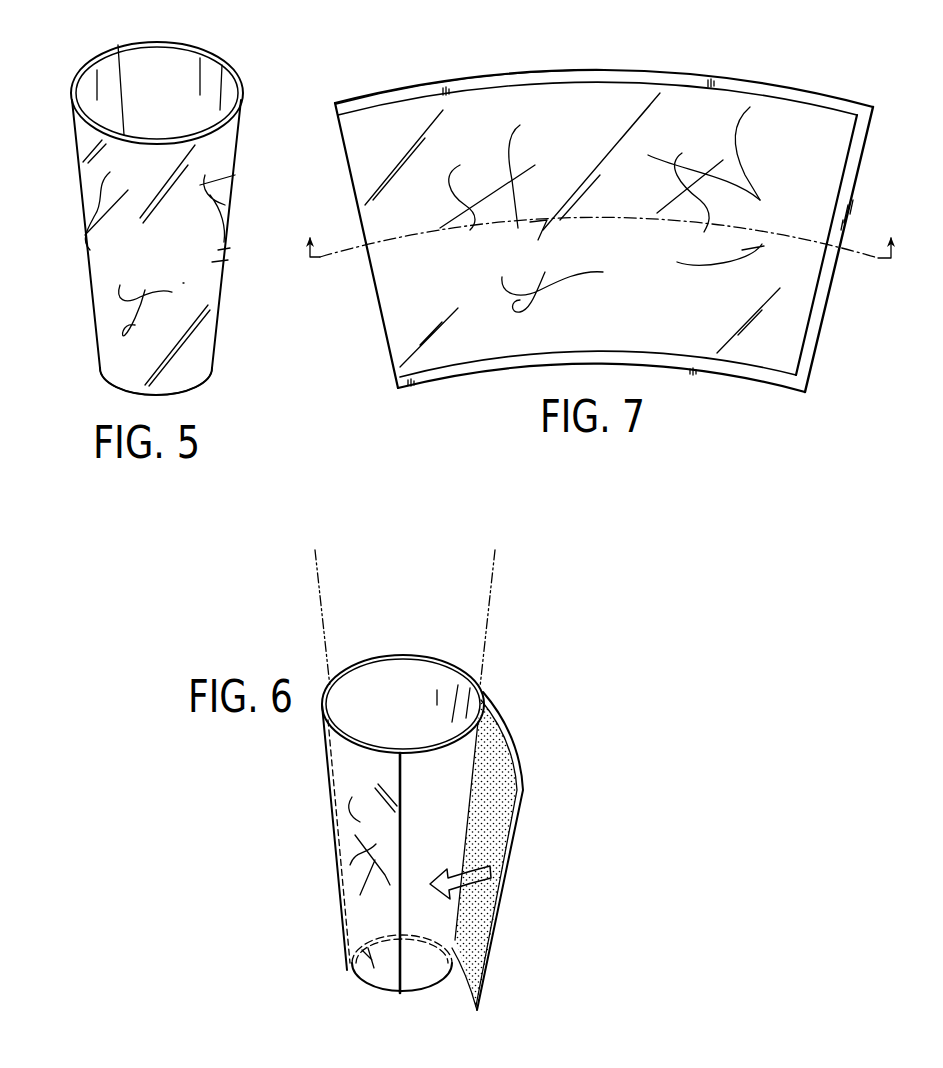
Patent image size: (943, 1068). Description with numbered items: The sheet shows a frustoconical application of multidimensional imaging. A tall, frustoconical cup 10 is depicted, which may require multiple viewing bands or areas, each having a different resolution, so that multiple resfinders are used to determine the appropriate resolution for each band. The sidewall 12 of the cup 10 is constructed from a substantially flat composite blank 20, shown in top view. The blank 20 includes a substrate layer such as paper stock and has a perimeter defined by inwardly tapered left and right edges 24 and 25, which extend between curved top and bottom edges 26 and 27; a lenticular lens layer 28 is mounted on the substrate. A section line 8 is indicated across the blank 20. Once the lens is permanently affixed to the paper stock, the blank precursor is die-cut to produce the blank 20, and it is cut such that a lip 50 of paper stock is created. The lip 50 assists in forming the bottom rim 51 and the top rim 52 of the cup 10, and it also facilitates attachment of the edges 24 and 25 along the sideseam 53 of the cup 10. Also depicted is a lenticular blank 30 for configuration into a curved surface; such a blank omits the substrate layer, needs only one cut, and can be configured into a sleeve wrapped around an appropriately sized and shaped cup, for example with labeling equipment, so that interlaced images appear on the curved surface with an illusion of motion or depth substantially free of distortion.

In FIG. 7, the section line 8- 8 is at (600, 257).
In FIG. 5, the frustoconical cup 10 is at (142, 210).
In FIG. 6, the frustoconical cup 10 is at (464, 780).
In FIG. 5, the sidewall 12 is at (88, 241).
In FIG. 7, the composite blank 20 is at (598, 220).
In FIG. 7, the left edge 24 is at (345, 181).
In FIG. 7, the right edge 25 is at (857, 184).
In FIG. 7, the top edge 26 is at (606, 75).
In FIG. 7, the bottom edge 27 is at (690, 372).
In FIG. 7, the lenticular lens layer 28 is at (783, 118).
In FIG. 6, the lenticular blank 30 is at (505, 766).
In FIG. 7, the lip 50 is at (385, 97).
In FIG. 5, the bottom rim 51 is at (205, 380).
In FIG. 5, the top rim 52 is at (167, 75).
In FIG. 5, the sideseam 53 is at (124, 92).